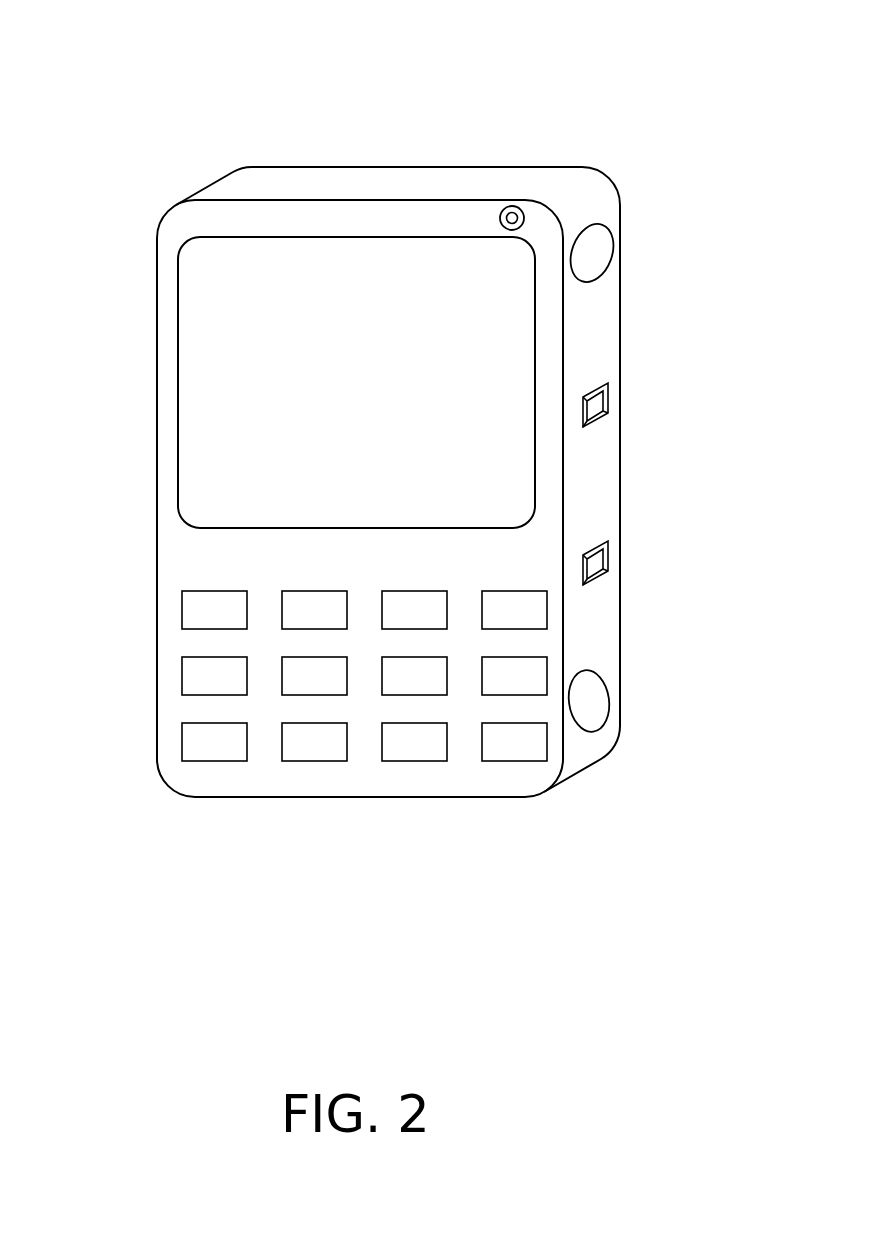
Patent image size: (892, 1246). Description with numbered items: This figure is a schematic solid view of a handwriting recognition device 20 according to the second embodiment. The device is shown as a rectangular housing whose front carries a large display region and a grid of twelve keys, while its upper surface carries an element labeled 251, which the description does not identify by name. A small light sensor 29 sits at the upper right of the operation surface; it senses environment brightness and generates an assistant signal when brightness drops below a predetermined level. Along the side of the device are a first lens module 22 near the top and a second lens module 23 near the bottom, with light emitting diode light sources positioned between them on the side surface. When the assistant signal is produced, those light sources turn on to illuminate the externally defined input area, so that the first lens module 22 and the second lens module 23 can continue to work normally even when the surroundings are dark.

The handwriting recognition device 20 is at (203, 78).
The display screen 251 is at (339, 218).
The light sensor 29 is at (514, 206).
The first lens module 22 is at (601, 245).
The second lens module 23 is at (590, 700).